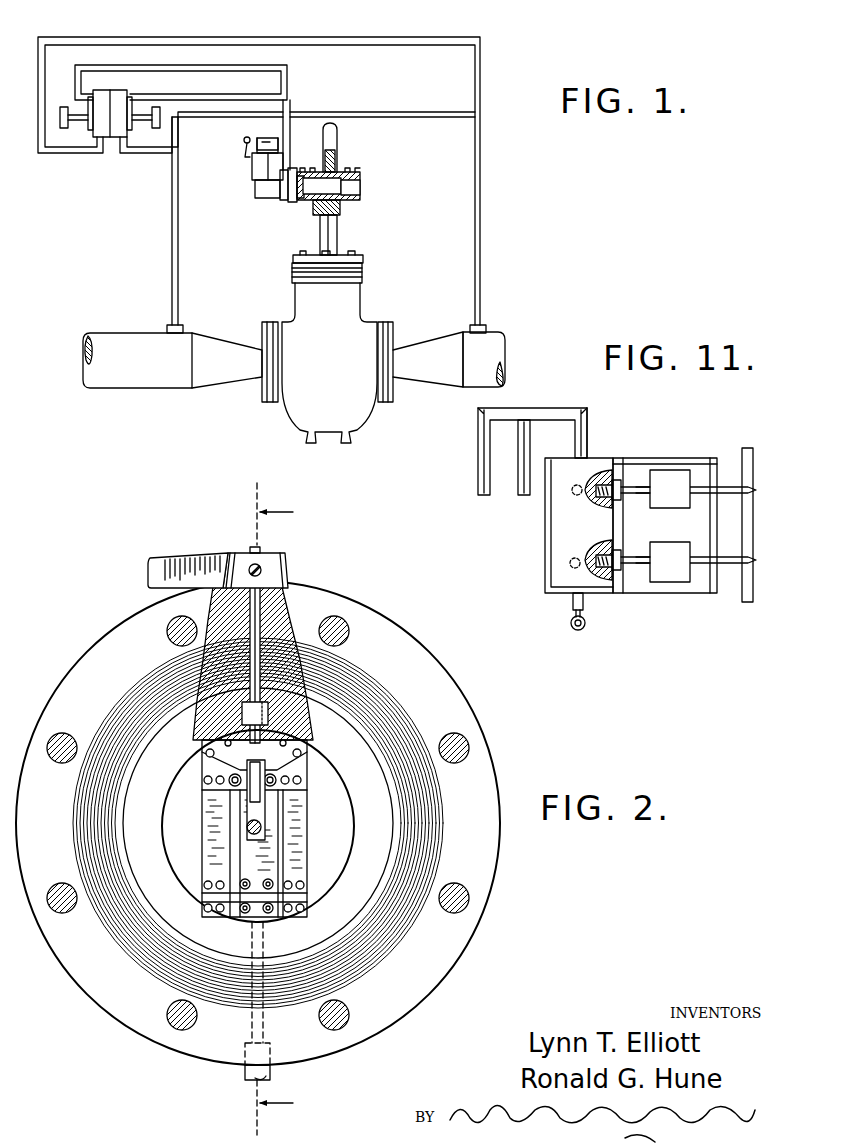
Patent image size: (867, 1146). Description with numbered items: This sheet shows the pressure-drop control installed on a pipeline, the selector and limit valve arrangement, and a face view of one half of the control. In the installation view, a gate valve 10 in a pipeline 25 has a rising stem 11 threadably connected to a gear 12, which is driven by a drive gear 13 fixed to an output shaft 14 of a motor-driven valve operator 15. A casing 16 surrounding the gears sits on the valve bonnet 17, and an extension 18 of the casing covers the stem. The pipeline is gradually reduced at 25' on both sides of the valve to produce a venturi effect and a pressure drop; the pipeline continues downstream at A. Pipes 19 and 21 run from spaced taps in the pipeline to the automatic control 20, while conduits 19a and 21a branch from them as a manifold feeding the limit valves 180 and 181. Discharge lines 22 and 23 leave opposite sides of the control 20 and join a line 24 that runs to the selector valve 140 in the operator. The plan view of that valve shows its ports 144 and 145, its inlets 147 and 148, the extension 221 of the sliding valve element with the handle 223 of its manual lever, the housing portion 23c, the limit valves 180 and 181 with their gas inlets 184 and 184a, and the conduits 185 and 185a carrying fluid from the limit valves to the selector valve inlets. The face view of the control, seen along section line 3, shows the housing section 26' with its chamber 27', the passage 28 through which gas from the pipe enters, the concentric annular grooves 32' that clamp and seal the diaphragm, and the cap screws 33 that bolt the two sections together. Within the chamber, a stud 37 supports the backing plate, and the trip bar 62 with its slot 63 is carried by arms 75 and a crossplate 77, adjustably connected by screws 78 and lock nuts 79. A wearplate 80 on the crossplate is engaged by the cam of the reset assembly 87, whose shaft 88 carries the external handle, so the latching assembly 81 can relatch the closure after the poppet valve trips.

In FIG. 1, the valve 10 is at (350, 312).
In FIG. 1, the stem 11 is at (346, 175).
In FIG. 1, the gear 12 is at (350, 196).
In FIG. 1, the drive gear 13 is at (301, 200).
In FIG. 1, the output shaft 14 is at (292, 204).
In FIG. 1, the valve operator 15 is at (278, 200).
In FIG. 1, the casing 16 is at (360, 186).
In FIG. 1, the valve bonnet 17 is at (340, 236).
In FIG. 1, the extension 18 is at (340, 130).
In FIG. 1, the pipe 19 is at (125, 155).
In FIG. 1, the conduit 19a is at (170, 128).
In FIG. 11, the conduit 19a is at (748, 600).
In FIG. 1, the automatic control 20 is at (114, 90).
In FIG. 1, the pipe 21 is at (414, 36).
In FIG. 2, the pipe 21 is at (272, 1073).
In FIG. 1, the conduit 21a is at (323, 115).
In FIG. 11, the conduit 21a is at (745, 450).
In FIG. 1, the discharge line 22 is at (260, 64).
In FIG. 11, the discharge line 22 is at (476, 460).
In FIG. 1, the discharge line 23 is at (240, 97).
In FIG. 11, the discharge line 23 is at (522, 488).
In FIG. 11, the housing 23c is at (598, 460).
In FIG. 1, the line 24 is at (290, 108).
In FIG. 11, the line 24 is at (588, 430).
In FIG. 1, the pipeline 25 is at (294, 345).
In FIG. 1, the reduced pipeline portion 25' is at (327, 343).
In FIG. 1, the downstream pipe A is at (505, 364).
In FIG. 2, the housing section 26' is at (258, 823).
In FIG. 2, the chamber 27' is at (258, 826).
In FIG. 2, the passage 28 is at (266, 942).
In FIG. 2, the concentric annular grooves 32' is at (258, 823).
In FIG. 2, the cap screws 33 is at (350, 1013).
In FIG. 2, the stud 37 is at (267, 815).
In FIG. 2, the trip bar 62 is at (254, 828).
In FIG. 2, the slot 63 is at (247, 831).
In FIG. 2, the arms 75 is at (210, 866).
In FIG. 2, the crossplate 77 is at (202, 772).
In FIG. 2, the screws 78 is at (290, 782).
In FIG. 2, the lock nuts 79 is at (327, 817).
In FIG. 2, the wearplate 80 is at (244, 752).
In FIG. 2, the latching assembly 81 is at (262, 770).
In FIG. 2, the reset assembly 87 is at (228, 552).
In FIG. 2, the shaft 88 is at (258, 608).
In FIG. 1, the selector valve 140 is at (260, 182).
In FIG. 11, the port 144 is at (569, 564).
In FIG. 11, the port 145 is at (575, 486).
In FIG. 11, the inlet 147 is at (590, 550).
In FIG. 11, the inlet 148 is at (590, 500).
In FIG. 1, the limit valve 180 is at (252, 165).
In FIG. 11, the limit valve 180 is at (670, 562).
In FIG. 1, the limit valve 181 is at (281, 156).
In FIG. 11, the limit valve 181 is at (670, 489).
In FIG. 1, the inlet 184 is at (272, 144).
In FIG. 11, the inlet 184 is at (698, 486).
In FIG. 1, the inlet 184a is at (260, 145).
In FIG. 11, the inlet 184a is at (703, 556).
In FIG. 11, the conduit 185 is at (641, 496).
In FIG. 11, the conduit 185a is at (641, 566).
In FIG. 11, the extension 221 is at (572, 602).
In FIG. 11, the handle 223 is at (586, 628).
In FIG. 2, the section line 3 is at (282, 809).